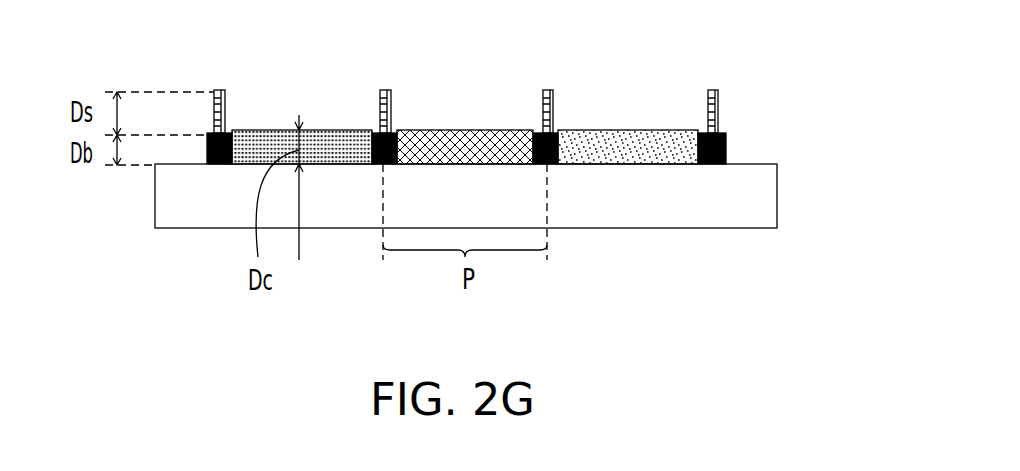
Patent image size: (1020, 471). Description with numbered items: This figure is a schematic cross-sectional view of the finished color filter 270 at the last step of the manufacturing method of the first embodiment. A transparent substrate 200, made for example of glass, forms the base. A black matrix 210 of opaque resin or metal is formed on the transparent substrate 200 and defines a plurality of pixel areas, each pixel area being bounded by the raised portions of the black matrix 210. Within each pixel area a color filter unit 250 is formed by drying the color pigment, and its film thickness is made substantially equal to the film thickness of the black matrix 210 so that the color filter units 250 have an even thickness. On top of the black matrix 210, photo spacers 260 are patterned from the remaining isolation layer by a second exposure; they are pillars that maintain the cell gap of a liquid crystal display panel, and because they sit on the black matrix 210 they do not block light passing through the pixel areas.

The transparent substrate 200 is at (736, 198).
The black matrix 210 is at (726, 145).
The color filter units 250 is at (633, 153).
The photo spacers 260 is at (717, 110).
The color filter 270 is at (507, 164).